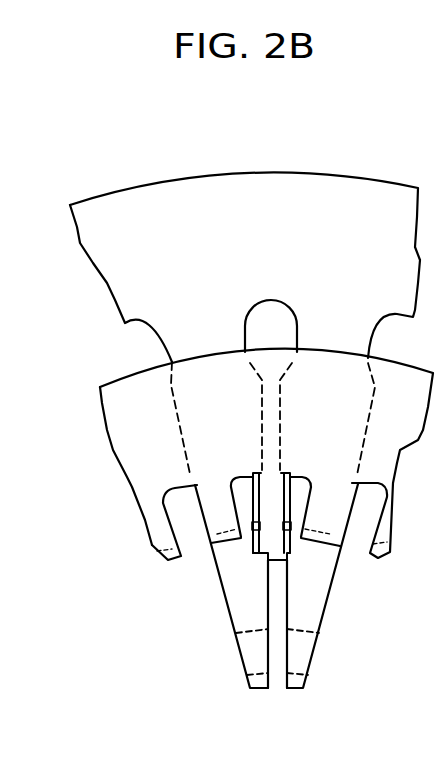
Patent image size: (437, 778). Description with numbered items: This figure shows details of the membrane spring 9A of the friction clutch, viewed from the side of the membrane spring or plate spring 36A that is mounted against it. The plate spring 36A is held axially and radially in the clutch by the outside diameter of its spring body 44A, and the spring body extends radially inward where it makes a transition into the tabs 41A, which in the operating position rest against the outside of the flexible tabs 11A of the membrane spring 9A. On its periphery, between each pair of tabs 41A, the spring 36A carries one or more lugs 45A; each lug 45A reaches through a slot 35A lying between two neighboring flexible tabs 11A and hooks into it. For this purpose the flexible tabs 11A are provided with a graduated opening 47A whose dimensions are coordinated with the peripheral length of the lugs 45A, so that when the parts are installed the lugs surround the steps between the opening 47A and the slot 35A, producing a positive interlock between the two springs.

The membrane spring 9A is at (257, 199).
The membrane spring/plate spring 36A is at (124, 374).
The spring body 44A is at (131, 437).
The tabs 41A is at (224, 522).
The lugs 45A is at (272, 548).
The graduated opening 47A is at (298, 560).
The flexible tabs 11A is at (297, 643).
The slots 35A is at (277, 605).